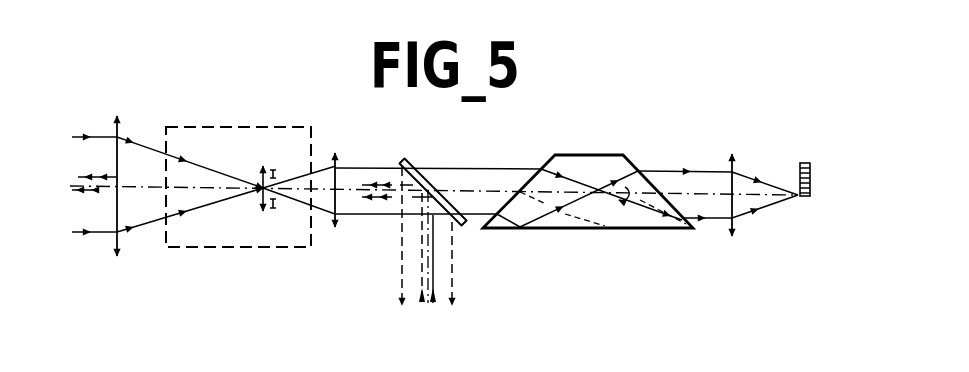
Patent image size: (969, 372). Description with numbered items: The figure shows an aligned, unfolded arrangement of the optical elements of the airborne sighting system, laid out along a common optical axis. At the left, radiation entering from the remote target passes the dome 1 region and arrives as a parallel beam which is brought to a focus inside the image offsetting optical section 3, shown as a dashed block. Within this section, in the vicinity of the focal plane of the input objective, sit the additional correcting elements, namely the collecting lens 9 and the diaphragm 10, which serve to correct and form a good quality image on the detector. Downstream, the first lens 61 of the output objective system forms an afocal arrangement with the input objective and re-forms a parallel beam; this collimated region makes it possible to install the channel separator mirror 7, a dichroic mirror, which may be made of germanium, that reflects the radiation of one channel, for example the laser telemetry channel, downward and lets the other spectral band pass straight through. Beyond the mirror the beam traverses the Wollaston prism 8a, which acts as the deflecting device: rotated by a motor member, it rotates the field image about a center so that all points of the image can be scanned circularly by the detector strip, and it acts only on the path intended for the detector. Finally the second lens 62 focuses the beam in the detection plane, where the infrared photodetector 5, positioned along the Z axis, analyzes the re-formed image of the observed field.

The dome 1 is at (121, 131).
The image offsetting optical section 3 is at (255, 127).
The collecting lens 9 is at (258, 177).
The diaphragm 10 is at (275, 208).
The first lens 61 is at (337, 156).
The channel separator mirror 7 is at (415, 159).
The Wollaston prism 8a is at (591, 156).
The second lens 62 is at (729, 155).
The photodetector 5 is at (796, 166).